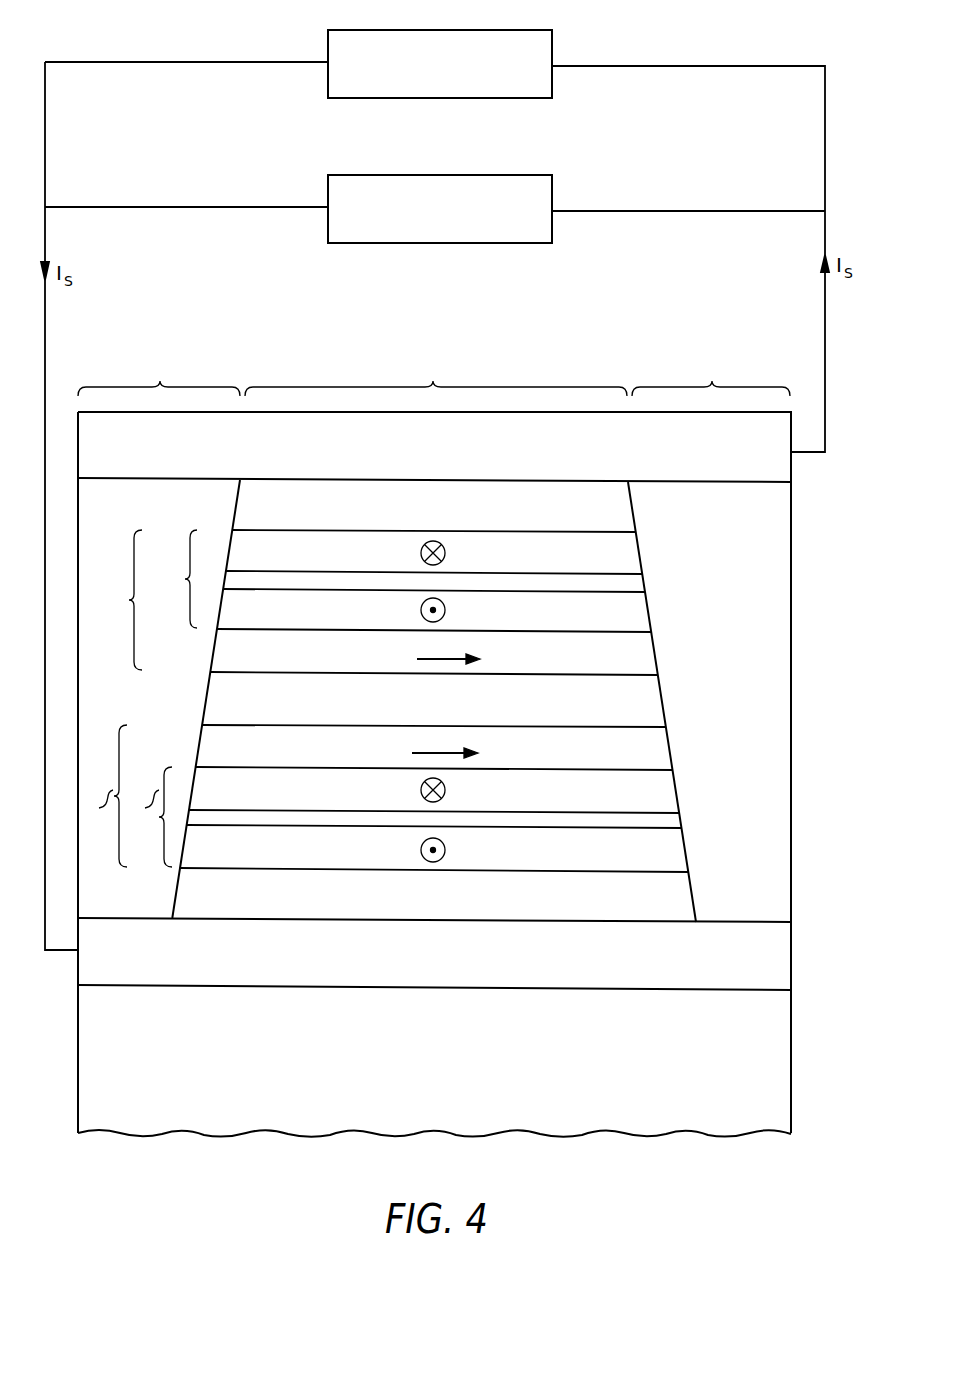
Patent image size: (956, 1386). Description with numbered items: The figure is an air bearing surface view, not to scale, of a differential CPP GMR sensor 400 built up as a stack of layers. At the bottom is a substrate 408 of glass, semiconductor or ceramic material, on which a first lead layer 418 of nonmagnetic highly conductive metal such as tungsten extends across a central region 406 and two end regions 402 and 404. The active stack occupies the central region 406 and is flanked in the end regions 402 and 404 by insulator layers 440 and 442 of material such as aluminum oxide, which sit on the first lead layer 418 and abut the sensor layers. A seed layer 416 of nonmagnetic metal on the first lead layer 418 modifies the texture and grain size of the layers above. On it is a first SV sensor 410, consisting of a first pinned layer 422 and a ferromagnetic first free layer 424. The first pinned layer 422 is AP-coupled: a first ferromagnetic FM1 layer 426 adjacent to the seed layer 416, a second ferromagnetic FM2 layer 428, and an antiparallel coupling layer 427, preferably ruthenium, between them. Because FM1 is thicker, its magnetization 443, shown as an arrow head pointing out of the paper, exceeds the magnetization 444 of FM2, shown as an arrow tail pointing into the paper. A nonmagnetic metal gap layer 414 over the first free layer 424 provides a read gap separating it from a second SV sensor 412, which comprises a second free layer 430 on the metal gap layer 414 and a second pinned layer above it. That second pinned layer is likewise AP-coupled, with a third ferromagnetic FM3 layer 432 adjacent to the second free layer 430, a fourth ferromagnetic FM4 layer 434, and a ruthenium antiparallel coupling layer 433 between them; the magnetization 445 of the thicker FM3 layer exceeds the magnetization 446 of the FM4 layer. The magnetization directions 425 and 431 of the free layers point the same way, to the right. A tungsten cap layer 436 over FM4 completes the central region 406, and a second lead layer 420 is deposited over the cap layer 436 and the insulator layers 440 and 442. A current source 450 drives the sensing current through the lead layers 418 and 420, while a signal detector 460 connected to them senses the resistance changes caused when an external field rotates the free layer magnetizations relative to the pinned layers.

The differential CPP GMR sensor 400 is at (680, 1182).
The end region 402 is at (159, 373).
The end region 404 is at (711, 375).
The central region 406 is at (436, 374).
The substrate 408 is at (628, 1101).
The first SV sensor 410 is at (105, 796).
The second SV sensor 412 is at (116, 600).
The metal gap layer 414 is at (660, 700).
The seed layer 416 is at (690, 897).
The first lead layer 418 is at (628, 976).
The second lead layer 420 is at (652, 459).
The first pinned layer 422 is at (149, 815).
The first free layer 424 is at (667, 748).
The magnetization direction 425 is at (412, 753).
The first ferromagnetic (FM1) layer 426 is at (683, 849).
The antiparallel coupling (APC) layer 427 is at (678, 818).
The second ferromagnetic (FM2) layer 428 is at (673, 790).
The second free layer 430 is at (652, 653).
The magnetization direction 431 is at (417, 659).
The third ferromagnetic (FM3) layer 432 is at (646, 613).
The antiparallel coupling (APC) layer 433 is at (641, 583).
The fourth ferromagnetic (FM4) layer 434 is at (636, 550).
The cap layer 436 is at (630, 512).
The insulator layer 440 is at (133, 516).
The insulator layer 442 is at (766, 556).
The magnetization 443 is at (445, 850).
The magnetization 444 is at (445, 790).
The magnetization 445 is at (445, 610).
The magnetization 446 is at (445, 553).
The current source 450 is at (532, 243).
The signal detector 460 is at (532, 98).